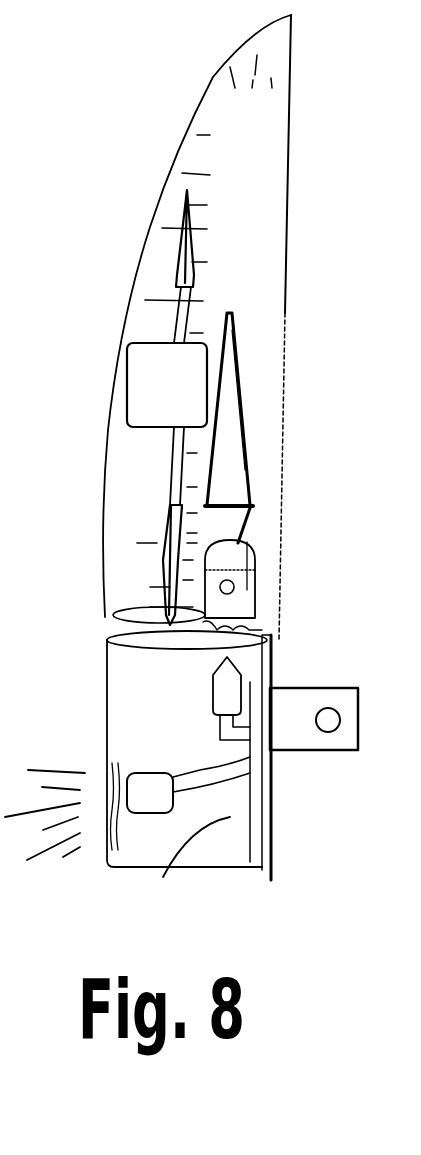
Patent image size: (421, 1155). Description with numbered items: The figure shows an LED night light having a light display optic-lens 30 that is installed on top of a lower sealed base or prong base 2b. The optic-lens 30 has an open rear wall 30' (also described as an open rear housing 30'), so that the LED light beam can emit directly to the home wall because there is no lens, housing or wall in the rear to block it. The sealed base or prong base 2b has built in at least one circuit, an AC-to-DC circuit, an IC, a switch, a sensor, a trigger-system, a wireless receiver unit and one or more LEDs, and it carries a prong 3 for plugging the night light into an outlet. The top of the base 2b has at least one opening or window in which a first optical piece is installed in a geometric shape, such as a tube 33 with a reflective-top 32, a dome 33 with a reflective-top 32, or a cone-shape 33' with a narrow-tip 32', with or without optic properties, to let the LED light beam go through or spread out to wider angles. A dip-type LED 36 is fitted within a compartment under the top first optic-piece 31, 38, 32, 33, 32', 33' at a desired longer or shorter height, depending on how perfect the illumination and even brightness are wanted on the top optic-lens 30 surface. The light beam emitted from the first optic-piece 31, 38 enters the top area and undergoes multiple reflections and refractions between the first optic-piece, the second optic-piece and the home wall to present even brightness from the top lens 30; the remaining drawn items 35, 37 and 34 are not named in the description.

The light display optic-lens 30 is at (197, 320).
The open rear wall 30' is at (311, 327).
The narrow-tip 32' is at (273, 394).
The cone-shape piece 33' is at (277, 400).
The reflective-top 32 is at (263, 488).
The tube or dome 33 is at (277, 547).
The first optic-piece 31 is at (233, 590).
The first optic-piece 38 is at (250, 627).
The sealed base or prong base 2b is at (218, 867).
The prong 3 is at (280, 690).
The LED 36 is at (212, 683).
The light module 35 is at (150, 770).
The light rays 37 is at (110, 817).
The inner bracket 34 is at (181, 872).